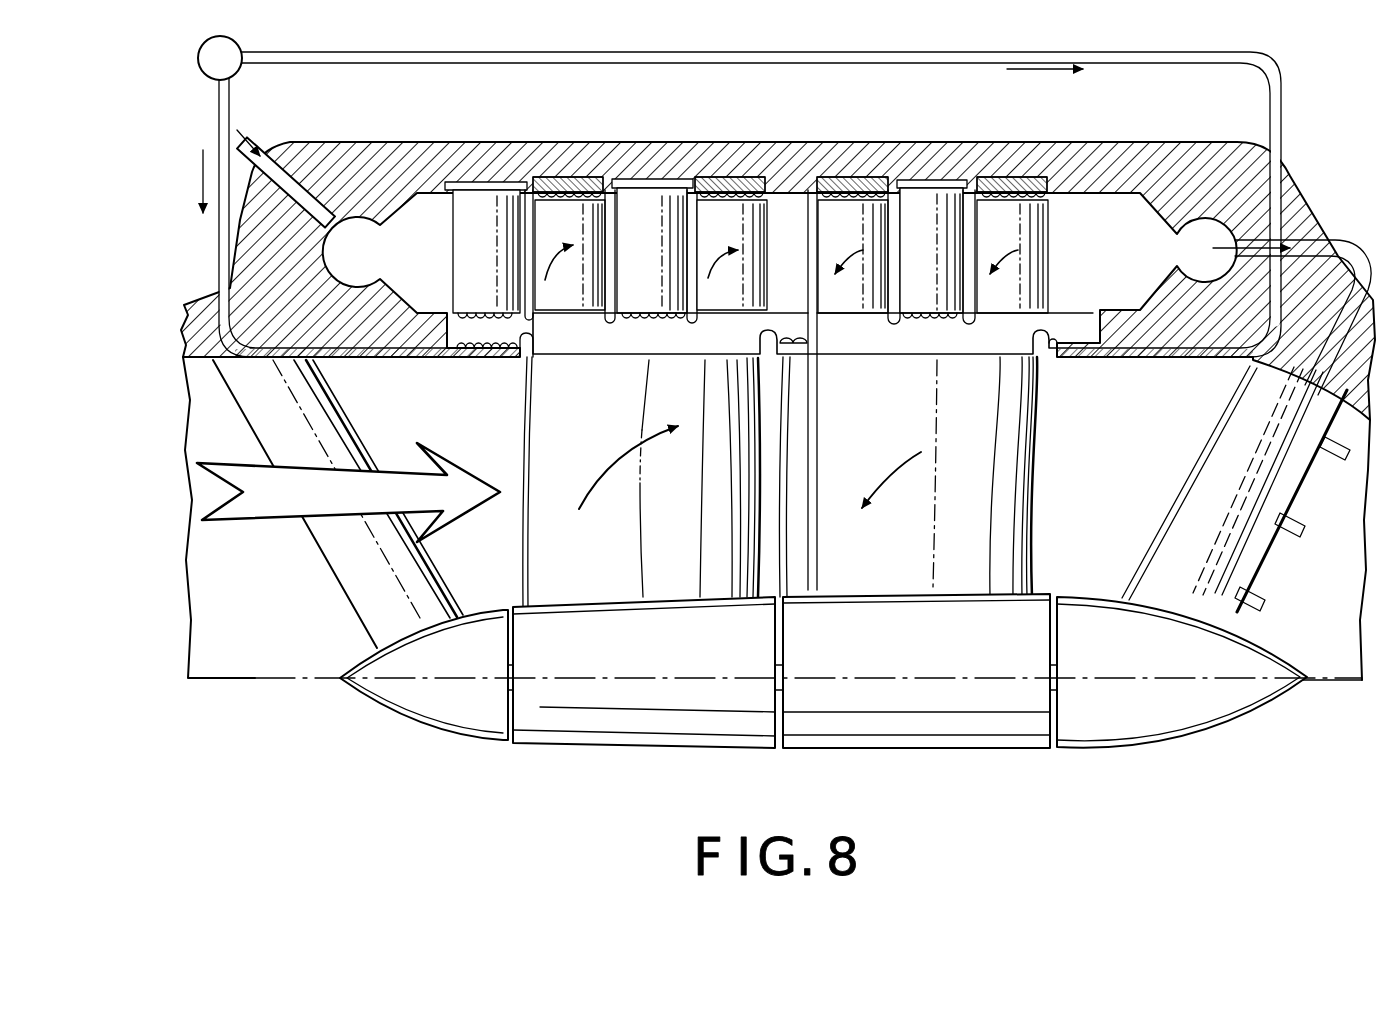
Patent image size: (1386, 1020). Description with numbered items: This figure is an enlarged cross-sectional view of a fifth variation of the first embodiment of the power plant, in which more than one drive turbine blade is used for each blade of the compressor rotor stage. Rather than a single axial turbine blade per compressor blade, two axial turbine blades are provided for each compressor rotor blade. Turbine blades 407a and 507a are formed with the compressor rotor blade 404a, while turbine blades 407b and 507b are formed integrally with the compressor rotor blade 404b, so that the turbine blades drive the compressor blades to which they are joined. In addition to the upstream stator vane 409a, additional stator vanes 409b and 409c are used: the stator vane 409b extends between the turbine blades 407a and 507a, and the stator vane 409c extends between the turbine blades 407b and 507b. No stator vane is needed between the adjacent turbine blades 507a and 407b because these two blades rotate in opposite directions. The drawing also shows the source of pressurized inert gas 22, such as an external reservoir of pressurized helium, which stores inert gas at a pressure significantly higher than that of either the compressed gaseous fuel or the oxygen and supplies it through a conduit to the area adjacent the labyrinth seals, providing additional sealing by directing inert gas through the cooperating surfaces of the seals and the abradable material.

The source of pressurized inert gas 22 is at (233, 64).
The upstream stator vane 409a is at (473, 200).
The turbine blade 407a is at (563, 217).
The stator vane 409b is at (650, 207).
The turbine blade 507a is at (727, 220).
The turbine blade 407b is at (840, 220).
The stator vane 409c is at (922, 207).
The turbine blade 507b is at (1007, 213).
The compressor rotor blade 404a is at (560, 402).
The compressor rotor blade 404b is at (1003, 457).